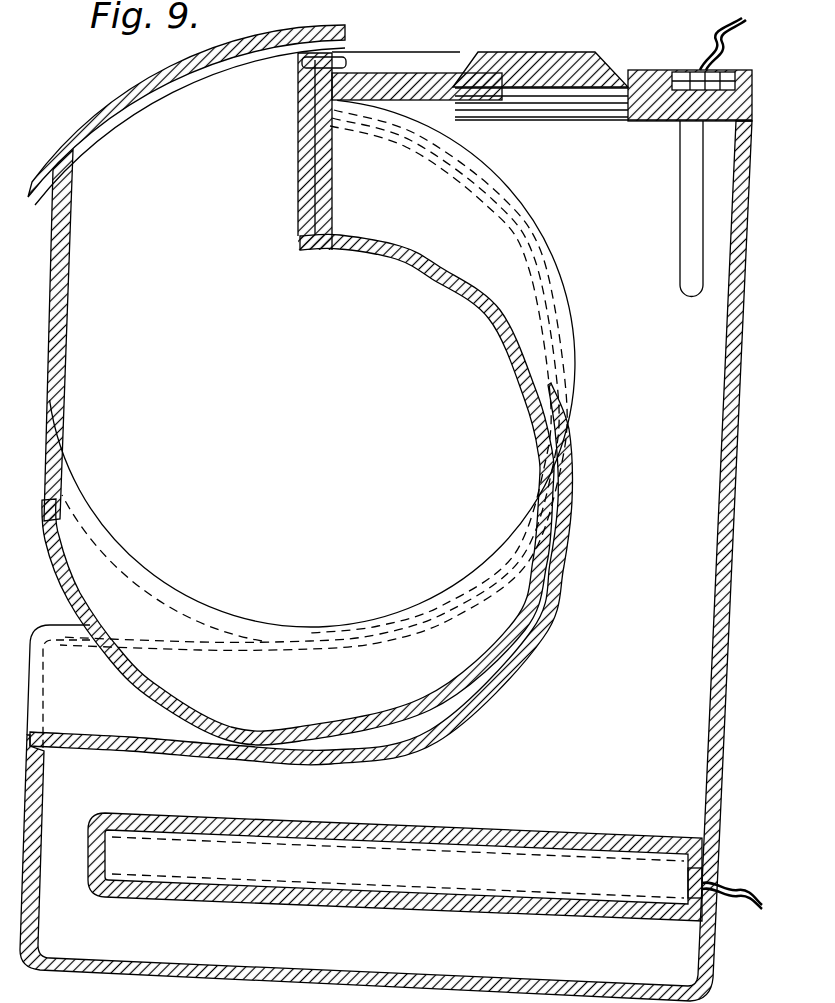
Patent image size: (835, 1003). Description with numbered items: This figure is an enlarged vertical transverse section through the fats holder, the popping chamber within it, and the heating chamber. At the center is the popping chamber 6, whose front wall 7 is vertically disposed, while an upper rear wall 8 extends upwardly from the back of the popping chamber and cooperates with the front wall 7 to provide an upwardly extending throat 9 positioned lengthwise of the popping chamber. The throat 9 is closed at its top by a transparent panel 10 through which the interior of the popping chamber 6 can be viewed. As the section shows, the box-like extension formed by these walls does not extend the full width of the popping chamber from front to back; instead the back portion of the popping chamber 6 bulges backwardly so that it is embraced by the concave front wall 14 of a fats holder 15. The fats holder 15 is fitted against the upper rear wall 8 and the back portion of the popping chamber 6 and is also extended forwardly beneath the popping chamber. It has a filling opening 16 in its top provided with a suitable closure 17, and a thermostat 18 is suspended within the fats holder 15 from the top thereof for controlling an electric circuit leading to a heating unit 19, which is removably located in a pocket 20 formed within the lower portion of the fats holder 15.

The popping chamber 6 is at (312, 363).
The front wall 7 is at (62, 310).
The upper rear wall 8 is at (300, 152).
The throat 9 is at (206, 211).
The transparent panel 10 is at (91, 117).
The concave front wall 14 is at (548, 357).
The fats holder 15 is at (668, 413).
The filling opening 16 is at (508, 103).
The closure 17 is at (600, 68).
The thermostat 18 is at (678, 203).
The heating unit 19 is at (437, 873).
The pocket 20 is at (362, 834).